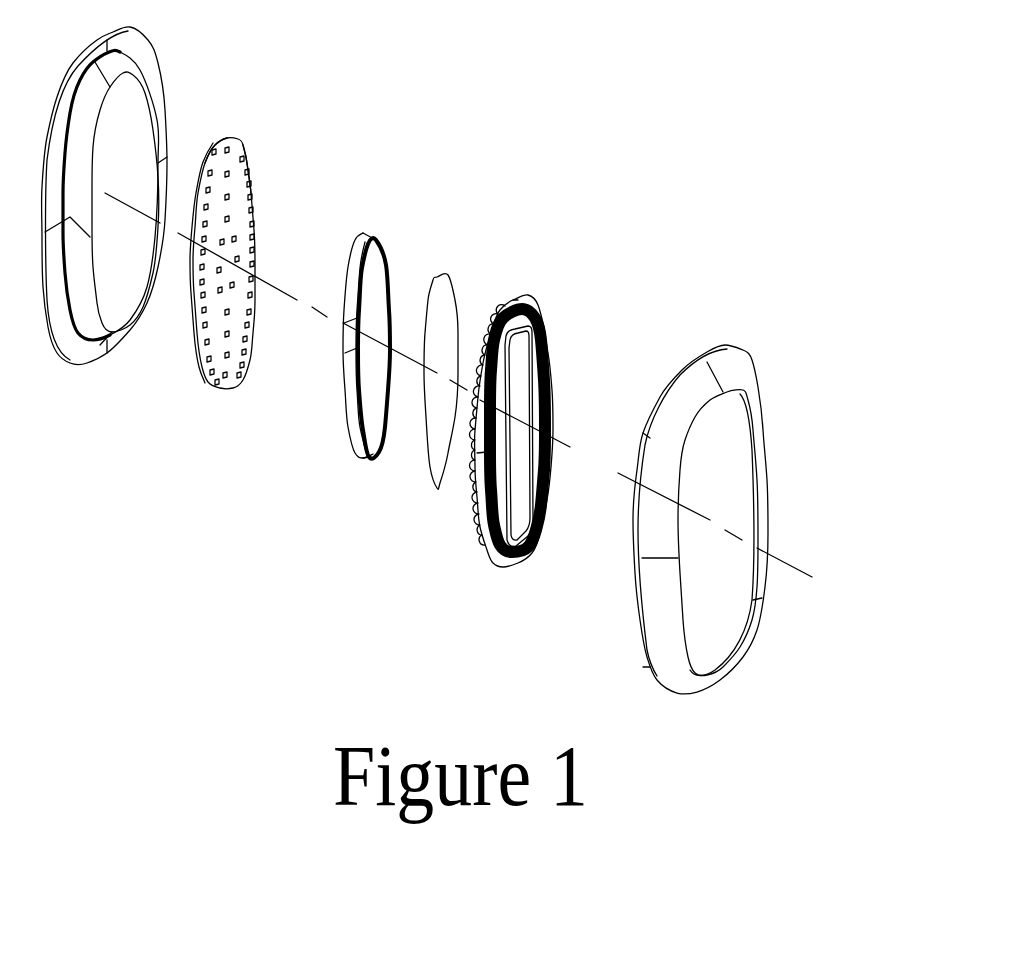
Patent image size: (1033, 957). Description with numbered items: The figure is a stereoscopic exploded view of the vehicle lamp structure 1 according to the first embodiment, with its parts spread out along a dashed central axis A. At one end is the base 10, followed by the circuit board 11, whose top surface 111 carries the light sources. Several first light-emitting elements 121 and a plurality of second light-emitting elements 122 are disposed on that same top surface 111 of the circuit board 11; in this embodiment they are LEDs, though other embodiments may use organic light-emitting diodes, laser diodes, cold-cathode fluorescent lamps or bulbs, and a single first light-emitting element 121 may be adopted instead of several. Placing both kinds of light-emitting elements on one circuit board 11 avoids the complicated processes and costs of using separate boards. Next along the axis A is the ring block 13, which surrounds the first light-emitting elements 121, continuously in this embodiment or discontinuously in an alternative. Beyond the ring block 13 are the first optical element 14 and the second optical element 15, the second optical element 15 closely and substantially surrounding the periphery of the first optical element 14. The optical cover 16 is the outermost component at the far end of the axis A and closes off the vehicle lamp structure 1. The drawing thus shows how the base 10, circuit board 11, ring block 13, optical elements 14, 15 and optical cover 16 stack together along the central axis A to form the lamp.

The vehicle lamp structure 1 is at (390, 150).
The base 10 is at (162, 48).
The circuit board 11 is at (273, 232).
The top surface 111 is at (222, 142).
The first light-emitting element 121 is at (227, 218).
The second light-emitting elements 122 is at (243, 137).
The ring block 13 is at (383, 238).
The first optical element 14 is at (448, 277).
The second optical element 15 is at (540, 298).
The optical cover 16 is at (753, 355).
The central axis A is at (472, 398).